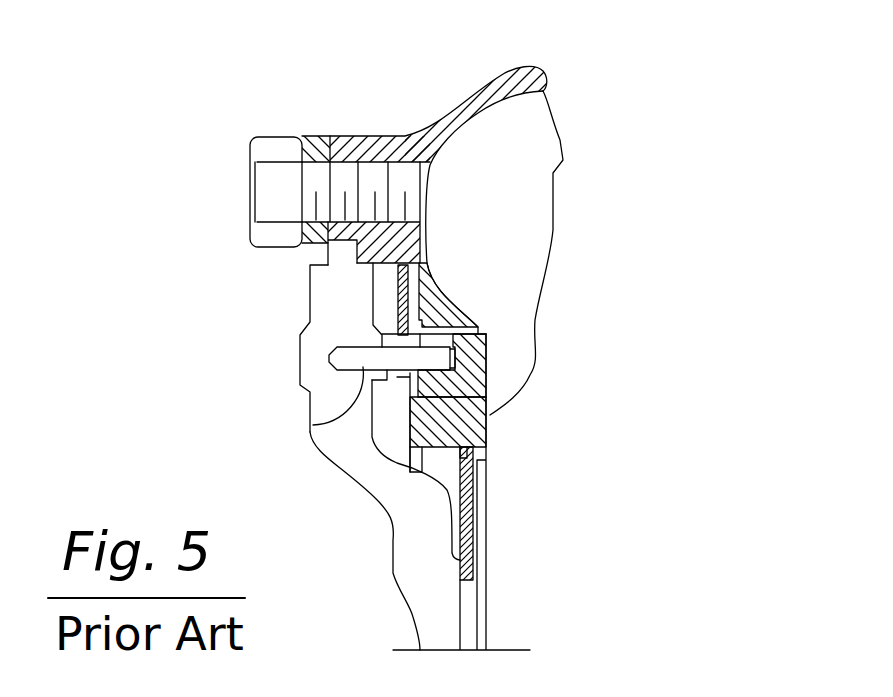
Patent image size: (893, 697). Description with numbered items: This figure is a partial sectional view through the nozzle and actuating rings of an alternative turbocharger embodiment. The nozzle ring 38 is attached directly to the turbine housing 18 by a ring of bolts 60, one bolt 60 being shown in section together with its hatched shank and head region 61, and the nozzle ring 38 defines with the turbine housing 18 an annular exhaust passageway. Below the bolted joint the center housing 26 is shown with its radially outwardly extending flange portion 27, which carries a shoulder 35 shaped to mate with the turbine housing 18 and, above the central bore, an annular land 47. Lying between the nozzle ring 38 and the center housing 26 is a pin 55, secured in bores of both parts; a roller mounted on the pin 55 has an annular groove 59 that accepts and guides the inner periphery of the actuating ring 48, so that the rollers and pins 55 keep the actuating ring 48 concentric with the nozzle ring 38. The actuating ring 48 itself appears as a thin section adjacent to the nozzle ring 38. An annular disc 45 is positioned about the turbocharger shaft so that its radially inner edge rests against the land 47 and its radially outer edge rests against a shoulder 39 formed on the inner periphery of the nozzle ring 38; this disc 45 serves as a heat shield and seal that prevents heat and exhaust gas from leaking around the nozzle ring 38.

The turbine housing 18 is at (483, 80).
The bolts 60 is at (275, 148).
The bolt 61 is at (307, 137).
The actuating ring 48 is at (408, 283).
The shoulder 35 is at (337, 257).
The flange portion 27 is at (315, 310).
The center housing 26 is at (312, 373).
The pins 55 is at (332, 420).
The annular groove 59 is at (397, 377).
The nozzle ring 38 is at (490, 402).
The shoulder 39 is at (490, 447).
The annular disc 45 is at (470, 550).
The annular land 47 is at (447, 595).